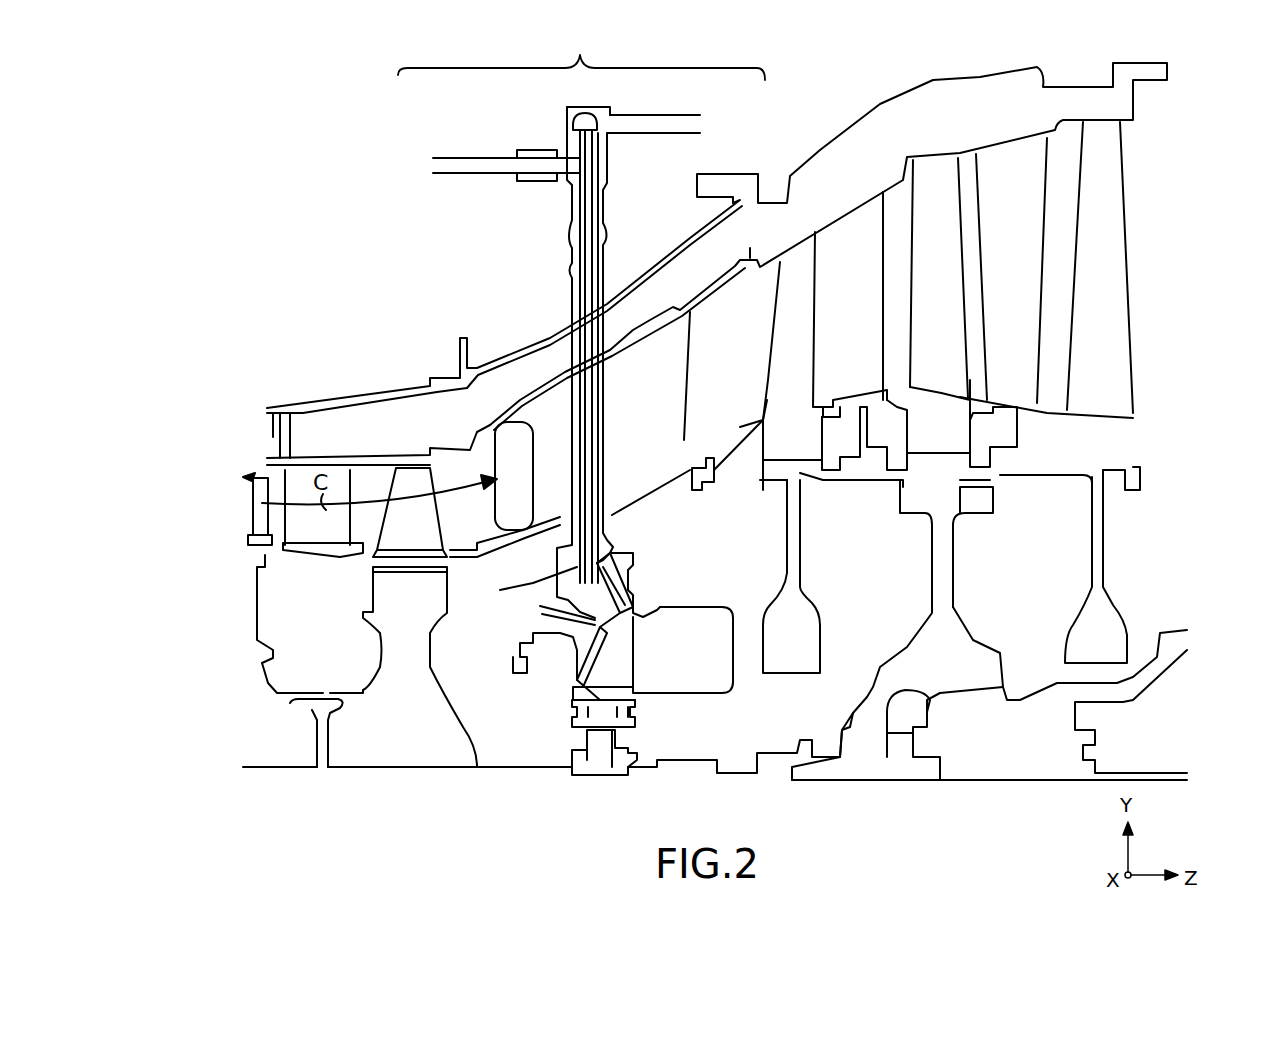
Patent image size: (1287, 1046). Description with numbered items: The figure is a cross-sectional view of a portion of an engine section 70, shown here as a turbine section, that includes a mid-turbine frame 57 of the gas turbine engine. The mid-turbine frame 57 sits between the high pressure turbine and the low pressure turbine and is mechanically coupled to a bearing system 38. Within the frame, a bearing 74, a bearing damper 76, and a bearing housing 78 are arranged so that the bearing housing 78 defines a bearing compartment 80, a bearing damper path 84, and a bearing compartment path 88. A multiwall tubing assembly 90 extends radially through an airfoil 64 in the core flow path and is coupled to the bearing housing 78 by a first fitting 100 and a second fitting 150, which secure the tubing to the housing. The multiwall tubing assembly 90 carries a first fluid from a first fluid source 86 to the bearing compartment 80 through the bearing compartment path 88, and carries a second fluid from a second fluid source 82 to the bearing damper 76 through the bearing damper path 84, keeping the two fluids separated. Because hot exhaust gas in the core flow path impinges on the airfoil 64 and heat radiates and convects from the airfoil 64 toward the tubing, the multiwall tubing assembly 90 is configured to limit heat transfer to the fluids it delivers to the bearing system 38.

The engine section 70 is at (212, 150).
The mid-turbine frame 57 is at (581, 56).
The second fluid source 82 is at (723, 122).
The first fluid source 86 is at (423, 163).
The multiwall tubing assembly 90 is at (545, 295).
The airfoil 64 is at (684, 386).
The first fitting 100 is at (613, 542).
The bearing compartment path 88 is at (611, 607).
The bearing housing 78 is at (640, 603).
The bearing compartment 80 is at (717, 620).
The second fitting 150 is at (553, 573).
The bearing damper path 84 is at (590, 622).
The bearing 74 is at (570, 740).
The bearing damper 76 is at (630, 707).
The bearing system 38 is at (1210, 650).